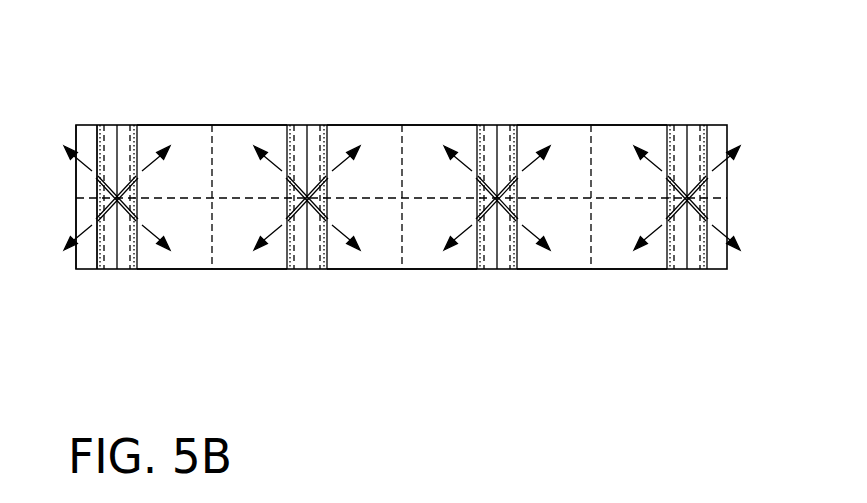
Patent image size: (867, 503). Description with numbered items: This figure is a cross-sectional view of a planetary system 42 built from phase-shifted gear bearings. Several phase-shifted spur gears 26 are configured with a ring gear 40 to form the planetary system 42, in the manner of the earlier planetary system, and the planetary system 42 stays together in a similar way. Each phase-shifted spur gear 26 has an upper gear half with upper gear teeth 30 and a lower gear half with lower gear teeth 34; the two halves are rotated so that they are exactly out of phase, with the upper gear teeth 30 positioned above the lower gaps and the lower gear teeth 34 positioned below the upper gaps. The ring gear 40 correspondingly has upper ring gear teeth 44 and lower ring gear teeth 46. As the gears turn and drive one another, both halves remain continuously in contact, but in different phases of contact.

The planetary system 42 is at (716, 112).
The upper ring gear teeth 44 is at (108, 124).
The upper gear teeth 30 is at (295, 125).
The ring gear 40 is at (83, 272).
The lower ring gear teeth 46 is at (112, 272).
The phase-shifted spur gear 26 is at (227, 272).
The lower gear teeth 34 is at (128, 270).